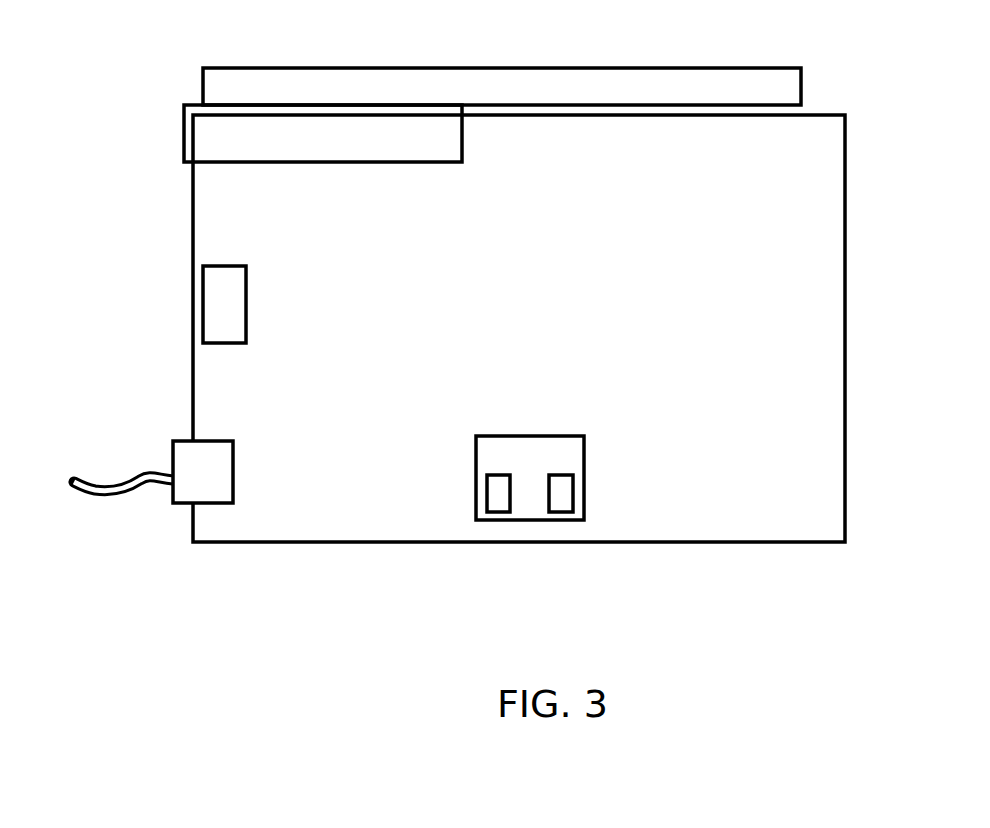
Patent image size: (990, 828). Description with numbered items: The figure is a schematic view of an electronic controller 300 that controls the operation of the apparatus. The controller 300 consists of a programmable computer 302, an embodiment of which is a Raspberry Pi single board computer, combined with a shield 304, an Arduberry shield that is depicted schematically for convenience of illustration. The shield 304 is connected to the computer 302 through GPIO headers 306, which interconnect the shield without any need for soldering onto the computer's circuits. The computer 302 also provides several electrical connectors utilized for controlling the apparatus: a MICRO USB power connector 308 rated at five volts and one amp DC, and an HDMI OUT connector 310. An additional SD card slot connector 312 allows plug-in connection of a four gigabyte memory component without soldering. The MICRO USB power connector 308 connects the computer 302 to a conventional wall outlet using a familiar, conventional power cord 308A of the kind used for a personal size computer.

The electronic controller 300 is at (848, 228).
The programmable computer 302 is at (662, 317).
The shield 304 is at (778, 92).
The GPIO headers 306 is at (192, 147).
The MICRO USB power connector 308 is at (187, 448).
The power cord 308A is at (127, 497).
The HDMI OUT connector 310 is at (482, 463).
The SD card slot connector 312 is at (205, 282).